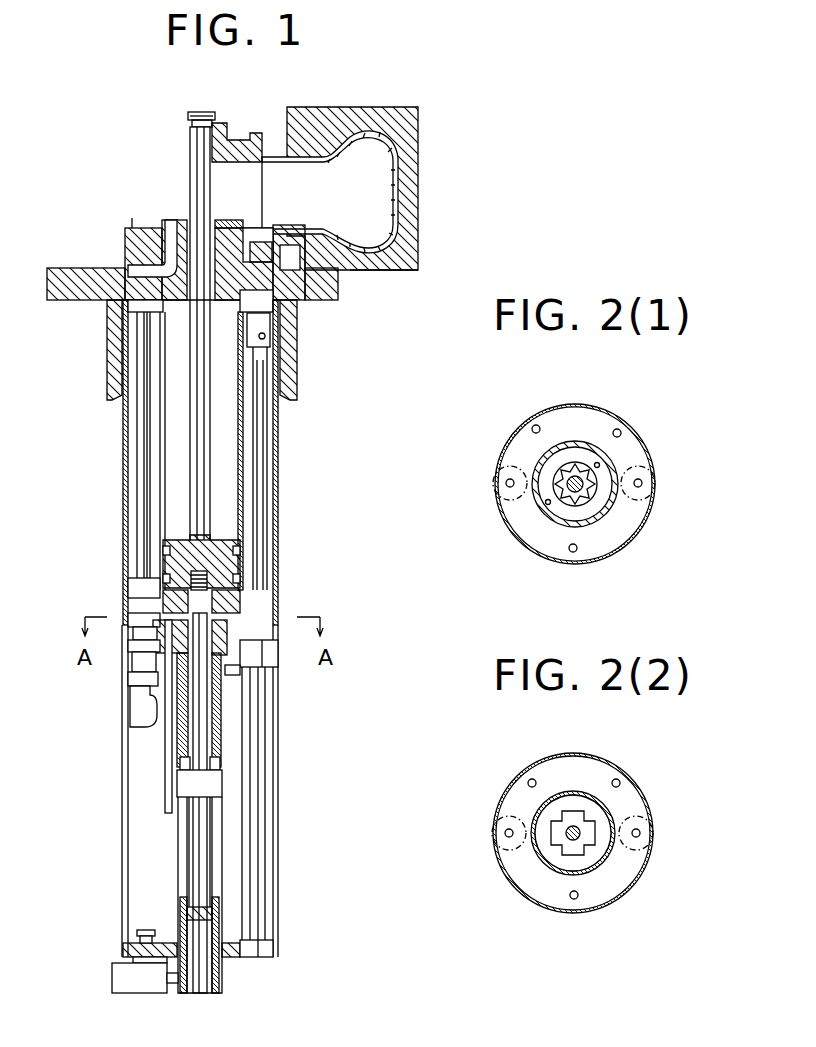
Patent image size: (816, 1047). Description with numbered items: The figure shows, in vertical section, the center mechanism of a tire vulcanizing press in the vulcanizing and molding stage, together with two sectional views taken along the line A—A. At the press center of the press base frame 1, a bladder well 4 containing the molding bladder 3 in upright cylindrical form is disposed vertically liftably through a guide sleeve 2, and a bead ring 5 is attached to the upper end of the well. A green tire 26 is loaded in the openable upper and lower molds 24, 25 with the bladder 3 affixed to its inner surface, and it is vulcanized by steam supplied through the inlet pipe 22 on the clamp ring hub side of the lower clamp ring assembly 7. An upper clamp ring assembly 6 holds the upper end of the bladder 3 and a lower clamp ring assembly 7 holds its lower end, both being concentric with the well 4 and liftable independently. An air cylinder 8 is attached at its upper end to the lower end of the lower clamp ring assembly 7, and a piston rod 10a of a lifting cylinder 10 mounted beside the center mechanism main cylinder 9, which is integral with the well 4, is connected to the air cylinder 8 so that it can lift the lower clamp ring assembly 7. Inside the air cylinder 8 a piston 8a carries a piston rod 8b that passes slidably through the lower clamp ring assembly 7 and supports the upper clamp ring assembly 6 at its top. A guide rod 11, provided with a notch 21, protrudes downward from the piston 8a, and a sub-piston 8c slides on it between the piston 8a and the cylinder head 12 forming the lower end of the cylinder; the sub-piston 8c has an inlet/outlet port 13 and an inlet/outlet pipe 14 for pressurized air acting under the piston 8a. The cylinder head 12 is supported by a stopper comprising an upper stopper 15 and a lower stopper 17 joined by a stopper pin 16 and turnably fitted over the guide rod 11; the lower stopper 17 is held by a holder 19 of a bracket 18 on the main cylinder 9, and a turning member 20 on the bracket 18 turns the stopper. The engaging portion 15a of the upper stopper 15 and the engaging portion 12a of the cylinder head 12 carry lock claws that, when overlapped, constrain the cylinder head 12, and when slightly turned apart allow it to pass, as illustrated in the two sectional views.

In FIG. 1, the press base frame 1 is at (338, 280).
In FIG. 1, the guide sleeve 2 is at (297, 355).
In FIG. 1, the molding bladder 3 is at (262, 152).
In FIG. 1, the bladder well 4 is at (281, 460).
In FIG. 1, the bead ring 5 is at (300, 240).
In FIG. 1, the upper clamp ring assembly 6 is at (228, 127).
In FIG. 1, the lower clamp ring assembly 7 is at (229, 319).
In FIG. 1, the air cylinder 8 is at (243, 494).
In FIG. 1, the piston 8a is at (222, 553).
The piston 8a is at (550, 855).
In FIG. 1, the piston rod 8b is at (205, 438).
In FIG. 1, the sub-piston 8c is at (222, 603).
In FIG. 1, the center mechanism main cylinder 9 is at (122, 840).
In FIG. 1, the lifting cylinder 10 is at (258, 730).
In FIG. 1, the piston rod 10a is at (263, 567).
In FIG. 1, the guide rod 11 is at (224, 743).
In FIG. 1, the cylinder head 12 is at (240, 658).
The cylinder head 12 is at (560, 455).
In FIG. 1, the engaging portion 12a is at (165, 635).
The engaging portion 12a is at (545, 505).
In FIG. 1, the inlet/outlet port 13 is at (160, 597).
In FIG. 1, the inlet/outlet pipe 14 is at (168, 790).
In FIG. 1, the upper stopper 15 is at (182, 737).
In FIG. 1, the engaging portion 15a is at (175, 660).
The engaging portion 15a is at (573, 826).
In FIG. 1, the stopper pin 16 is at (212, 788).
In FIG. 1, the lower stopper 17 is at (215, 838).
In FIG. 1, the bracket 18 is at (126, 950).
In FIG. 1, the holder 19 is at (215, 912).
In FIG. 1, the turning member 20 is at (120, 983).
In FIG. 1, the notch 21 is at (197, 877).
In FIG. 1, the inlet pipe 22 is at (137, 488).
In FIG. 1, the upper mold 24 is at (406, 117).
In FIG. 1, the lower mold 25 is at (403, 262).
In FIG. 1, the green tire 26 is at (403, 160).